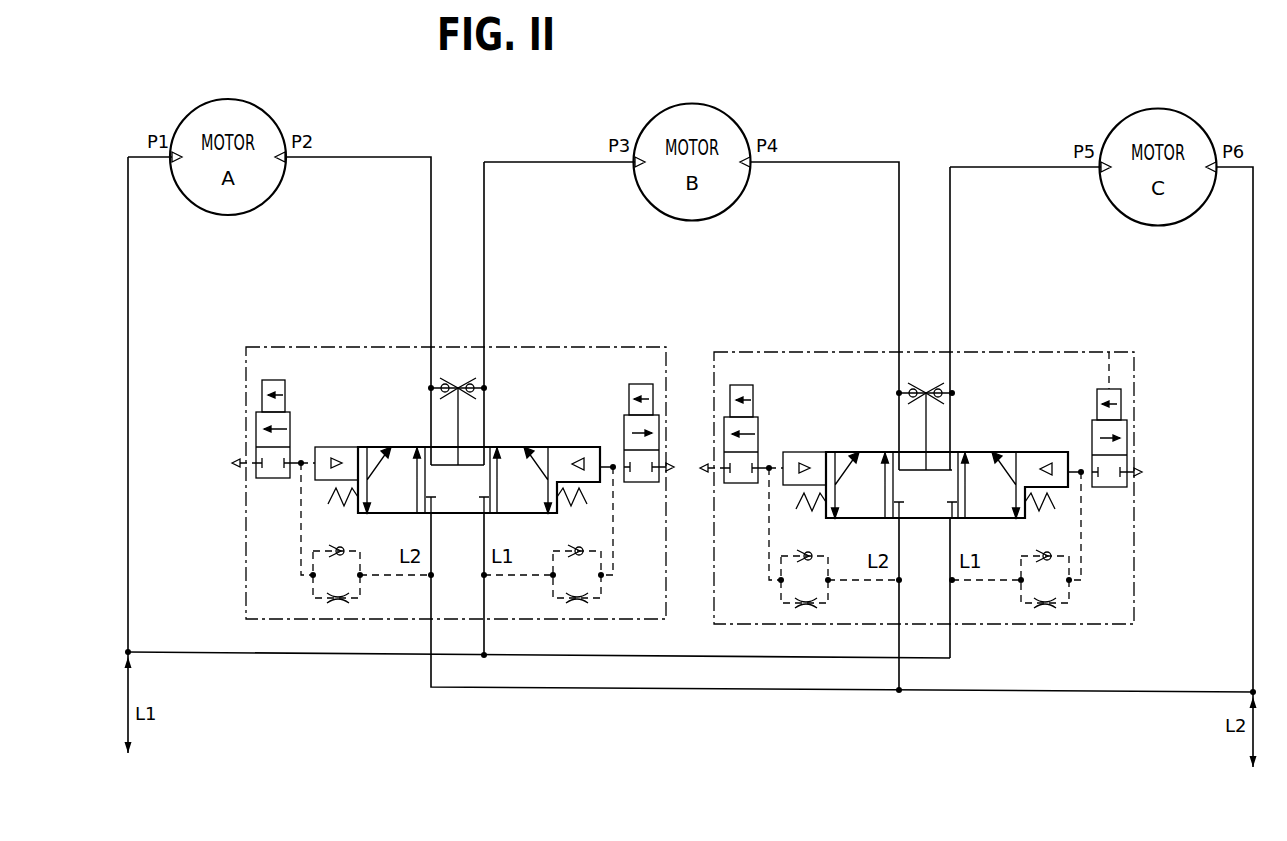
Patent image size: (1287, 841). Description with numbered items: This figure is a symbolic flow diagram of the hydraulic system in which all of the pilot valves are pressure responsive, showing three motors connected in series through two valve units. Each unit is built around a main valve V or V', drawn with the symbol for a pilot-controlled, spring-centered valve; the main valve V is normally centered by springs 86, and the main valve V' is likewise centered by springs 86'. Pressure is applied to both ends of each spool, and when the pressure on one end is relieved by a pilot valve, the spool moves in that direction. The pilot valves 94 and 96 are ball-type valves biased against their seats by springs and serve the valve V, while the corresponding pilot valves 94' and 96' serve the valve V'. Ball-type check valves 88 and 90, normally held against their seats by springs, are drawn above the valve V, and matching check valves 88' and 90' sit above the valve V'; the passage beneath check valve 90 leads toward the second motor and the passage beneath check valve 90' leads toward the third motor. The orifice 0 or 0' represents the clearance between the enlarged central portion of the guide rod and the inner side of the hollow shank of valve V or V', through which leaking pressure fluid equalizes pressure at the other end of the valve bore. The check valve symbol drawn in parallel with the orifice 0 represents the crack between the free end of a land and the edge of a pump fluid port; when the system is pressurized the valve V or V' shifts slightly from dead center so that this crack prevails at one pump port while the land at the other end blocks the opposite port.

The pilot valve 94 is at (292, 429).
The pilot valve 96 is at (624, 433).
The check valve 88 is at (442, 380).
The check valve 90 is at (486, 380).
The springs 86 is at (460, 512).
The orifice 0 is at (470, 581).
The main valve V is at (479, 467).
The pilot valve 94' is at (762, 434).
The pilot valve 96' is at (1090, 438).
The check valve 88' is at (909, 385).
The check valve 90' is at (957, 385).
The springs 86' is at (929, 517).
The orifice 0' is at (940, 586).
The main valve V' is at (947, 472).